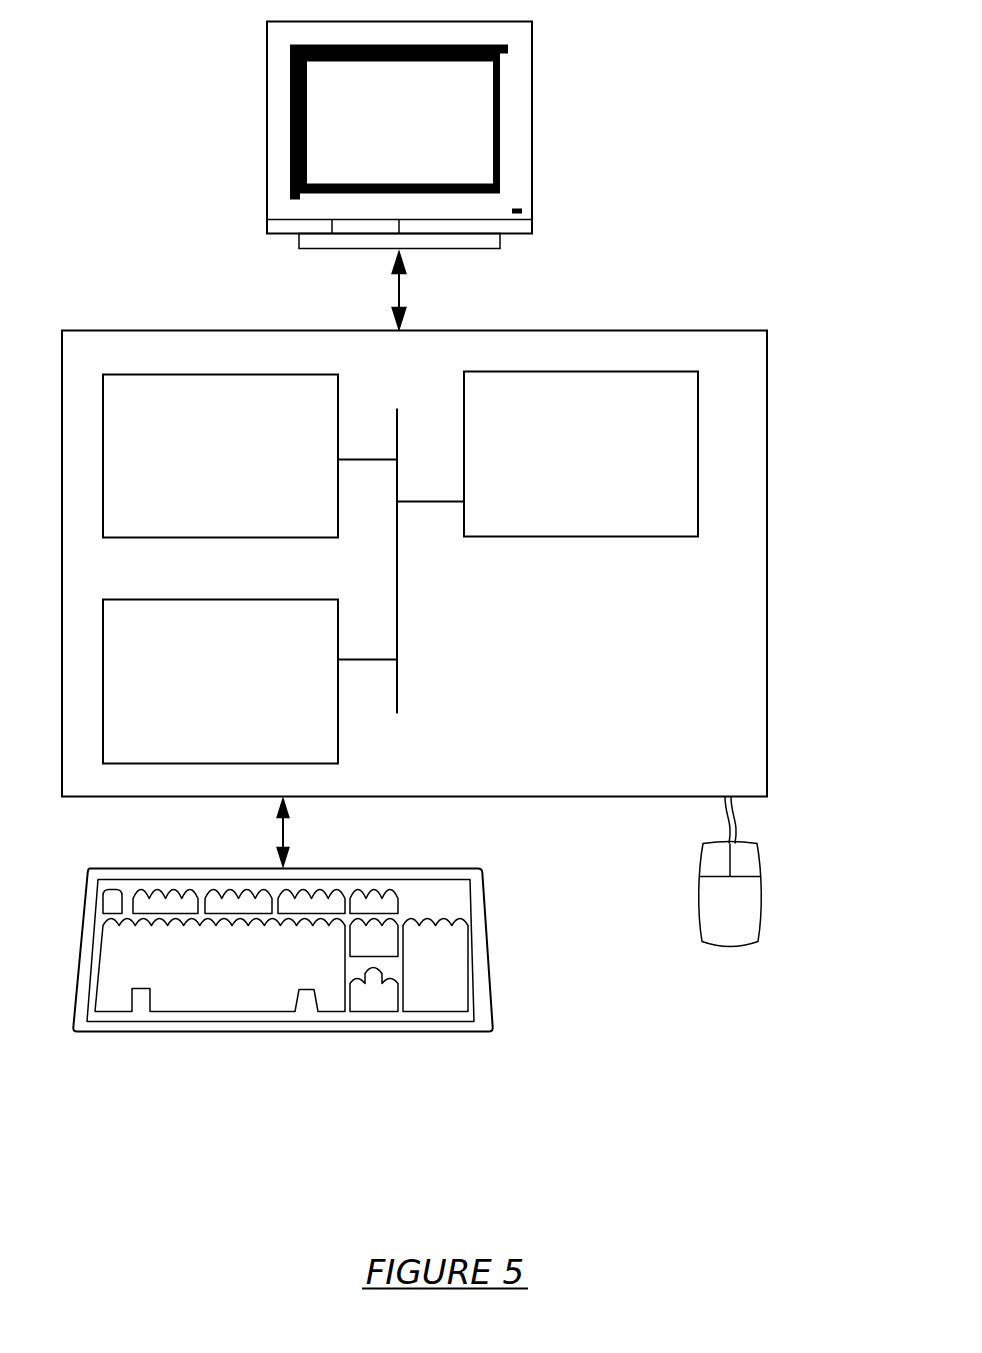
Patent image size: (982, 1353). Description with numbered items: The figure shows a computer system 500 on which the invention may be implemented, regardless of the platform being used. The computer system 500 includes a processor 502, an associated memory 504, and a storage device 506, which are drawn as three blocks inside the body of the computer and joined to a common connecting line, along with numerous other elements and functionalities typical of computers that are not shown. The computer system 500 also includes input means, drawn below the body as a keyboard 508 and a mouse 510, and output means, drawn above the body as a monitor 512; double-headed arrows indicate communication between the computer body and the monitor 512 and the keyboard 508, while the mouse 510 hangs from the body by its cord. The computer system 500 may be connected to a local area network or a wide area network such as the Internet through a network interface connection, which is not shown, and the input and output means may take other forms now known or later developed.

The computer system 500 is at (784, 179).
The processor 502 is at (558, 465).
The memory 504 is at (196, 467).
The storage device 506 is at (193, 693).
The keyboard 508 is at (193, 980).
The mouse 510 is at (706, 918).
The monitor 512 is at (374, 138).